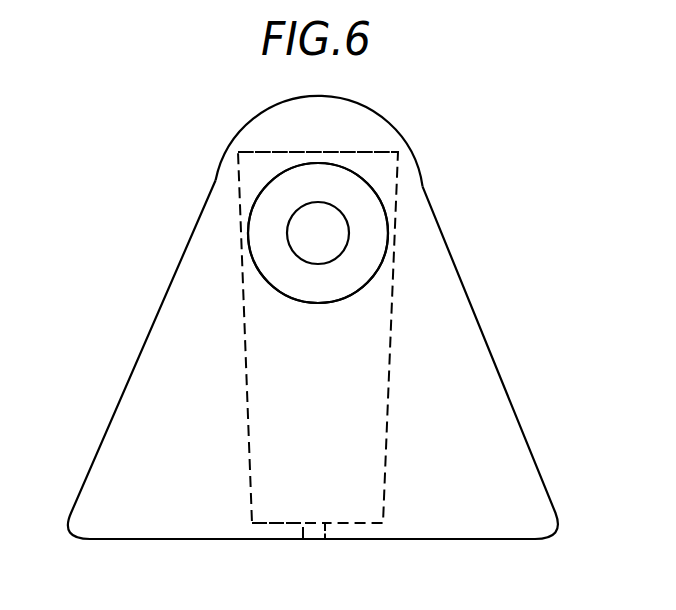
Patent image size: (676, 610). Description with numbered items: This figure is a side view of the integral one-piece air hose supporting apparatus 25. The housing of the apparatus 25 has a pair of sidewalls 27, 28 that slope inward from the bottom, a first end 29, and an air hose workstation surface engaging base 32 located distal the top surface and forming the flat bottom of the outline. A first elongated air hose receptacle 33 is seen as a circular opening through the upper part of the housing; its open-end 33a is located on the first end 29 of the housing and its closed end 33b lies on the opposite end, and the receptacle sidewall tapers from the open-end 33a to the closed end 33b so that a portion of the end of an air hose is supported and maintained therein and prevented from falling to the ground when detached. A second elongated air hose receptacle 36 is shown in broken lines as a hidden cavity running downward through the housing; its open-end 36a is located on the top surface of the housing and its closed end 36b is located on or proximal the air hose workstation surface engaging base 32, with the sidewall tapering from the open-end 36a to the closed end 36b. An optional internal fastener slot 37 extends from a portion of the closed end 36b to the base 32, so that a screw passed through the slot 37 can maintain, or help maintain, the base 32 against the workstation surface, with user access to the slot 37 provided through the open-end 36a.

The air hose supporting apparatus 25 is at (338, 315).
The sidewall 27 is at (135, 363).
The sidewall 28 is at (537, 462).
The first end 29 is at (143, 513).
The air hose workstation surface engaging base 32 is at (490, 539).
The first elongated air hose receptacle 33 is at (329, 248).
The open-end 33a is at (388, 237).
The closed end 33b is at (298, 232).
The second elongated air hose receptacle 36 is at (383, 333).
The open-end 36a is at (324, 152).
The closed end 36b is at (280, 539).
The internal fastener slot 37 is at (317, 540).